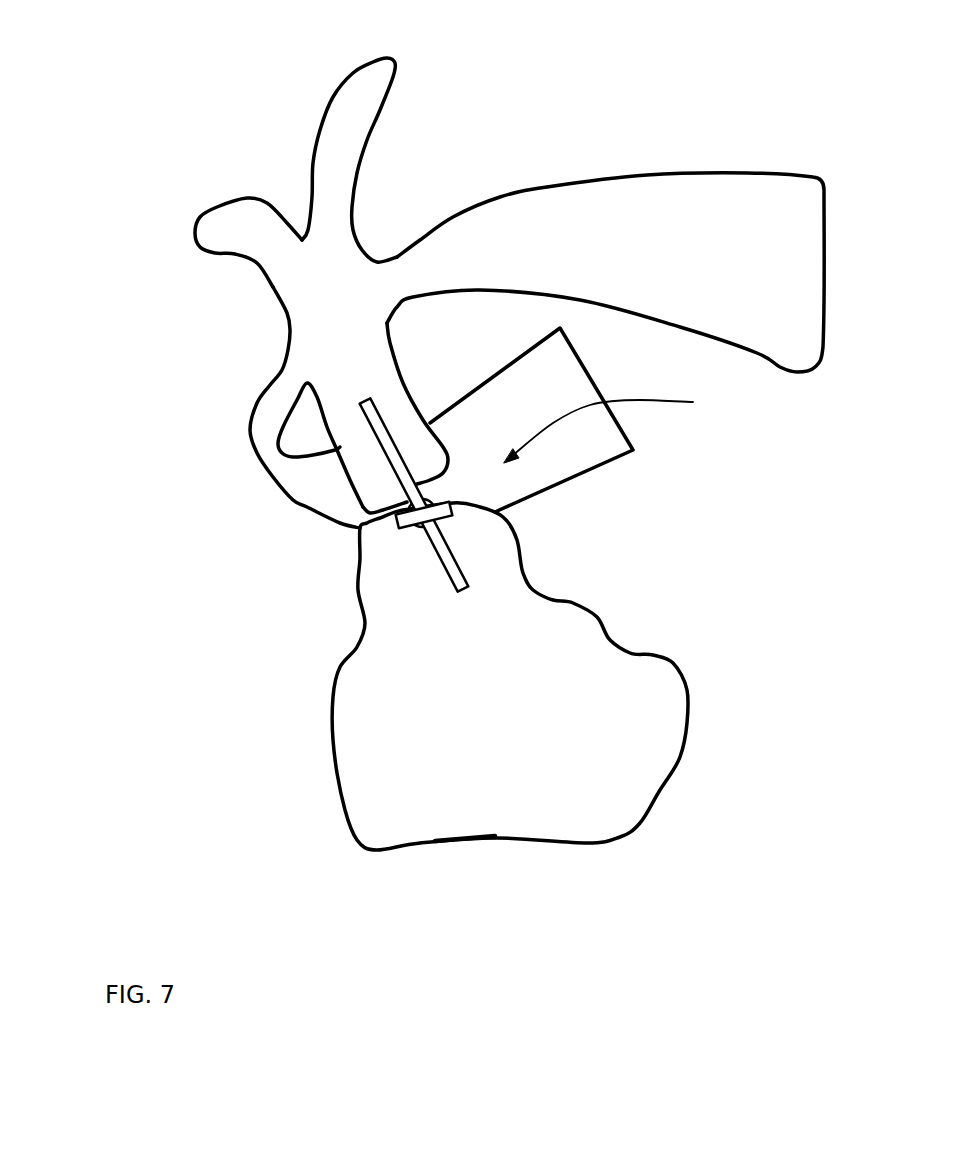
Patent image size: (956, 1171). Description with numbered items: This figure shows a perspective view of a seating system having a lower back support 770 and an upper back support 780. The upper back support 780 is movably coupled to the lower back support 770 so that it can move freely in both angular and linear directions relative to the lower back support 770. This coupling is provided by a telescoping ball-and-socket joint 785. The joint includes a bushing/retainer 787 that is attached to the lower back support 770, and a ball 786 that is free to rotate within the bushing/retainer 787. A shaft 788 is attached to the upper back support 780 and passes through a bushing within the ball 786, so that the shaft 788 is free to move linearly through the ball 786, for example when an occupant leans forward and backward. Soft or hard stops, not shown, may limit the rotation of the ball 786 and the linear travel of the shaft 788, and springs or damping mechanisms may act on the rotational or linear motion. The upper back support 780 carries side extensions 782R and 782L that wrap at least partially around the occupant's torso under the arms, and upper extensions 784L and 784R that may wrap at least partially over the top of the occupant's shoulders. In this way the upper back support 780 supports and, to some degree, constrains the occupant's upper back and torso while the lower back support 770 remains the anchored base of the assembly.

The lower back support 770 is at (677, 770).
The upper back support 780 is at (287, 345).
The left side extension 782L is at (623, 465).
The right side extension 782R is at (757, 353).
The left upper extension 784L is at (217, 212).
The right upper extension 784R is at (395, 63).
The telescoping ball-and-socket joint 785 is at (621, 429).
The ball 786 is at (403, 502).
The bushing/retainer 787 is at (453, 500).
The shaft 788 is at (457, 557).